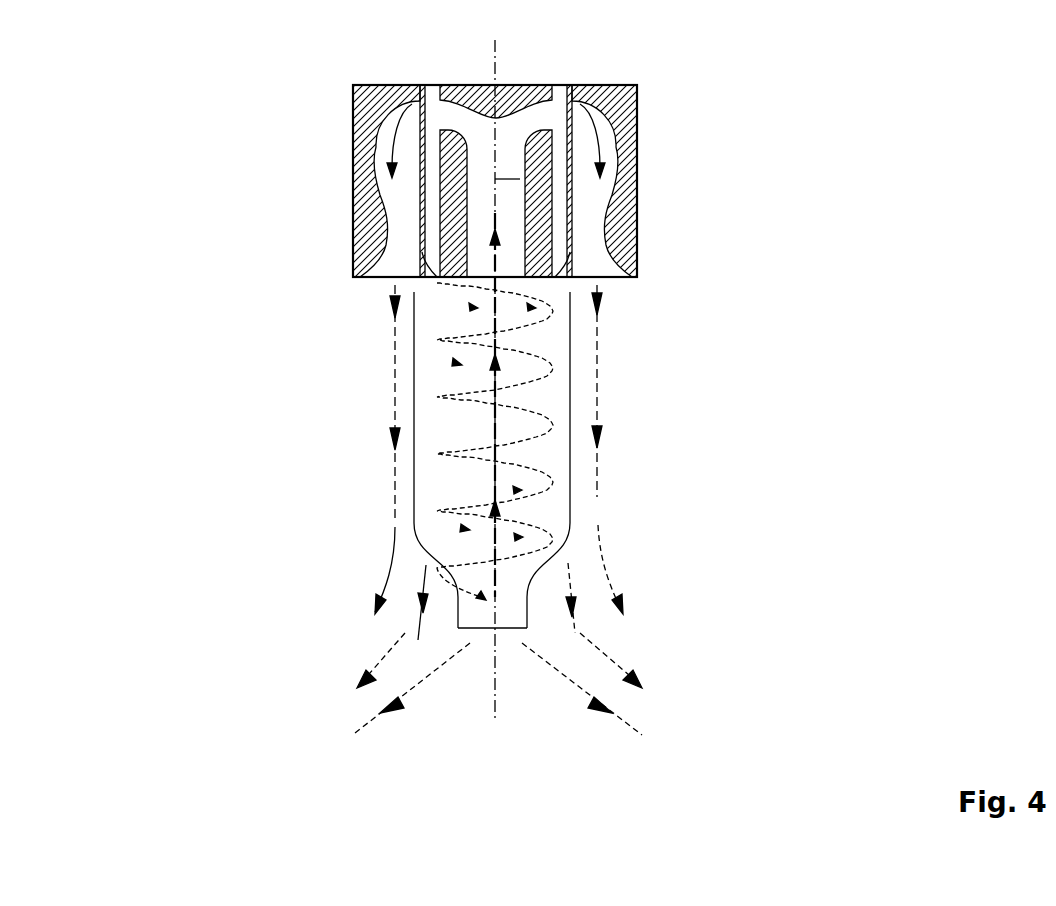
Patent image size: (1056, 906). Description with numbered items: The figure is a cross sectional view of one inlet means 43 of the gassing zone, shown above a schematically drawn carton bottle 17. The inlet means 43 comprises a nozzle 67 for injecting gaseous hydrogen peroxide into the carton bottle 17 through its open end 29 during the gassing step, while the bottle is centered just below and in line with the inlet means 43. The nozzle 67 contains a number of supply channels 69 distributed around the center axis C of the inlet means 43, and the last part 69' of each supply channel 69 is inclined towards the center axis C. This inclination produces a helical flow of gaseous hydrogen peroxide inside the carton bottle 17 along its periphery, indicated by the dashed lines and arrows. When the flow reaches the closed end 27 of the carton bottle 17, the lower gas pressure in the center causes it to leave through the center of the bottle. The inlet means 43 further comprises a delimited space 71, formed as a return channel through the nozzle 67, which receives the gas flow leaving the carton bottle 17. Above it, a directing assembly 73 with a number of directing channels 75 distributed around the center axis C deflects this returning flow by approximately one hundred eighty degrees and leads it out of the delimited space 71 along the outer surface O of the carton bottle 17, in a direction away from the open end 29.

The inlet means 43 is at (222, 102).
The directing assembly 73 is at (502, 127).
The directing channels 75 is at (377, 152).
The supply channels 69 is at (422, 181).
The last part of the supply channels 69' is at (415, 271).
The delimited space 71 is at (512, 233).
The nozzle 67 is at (575, 254).
The open end 29 is at (437, 300).
The carton bottle 17 is at (553, 411).
The closed end 27 is at (503, 630).
The outer surface O is at (572, 335).
The center axis C is at (495, 396).